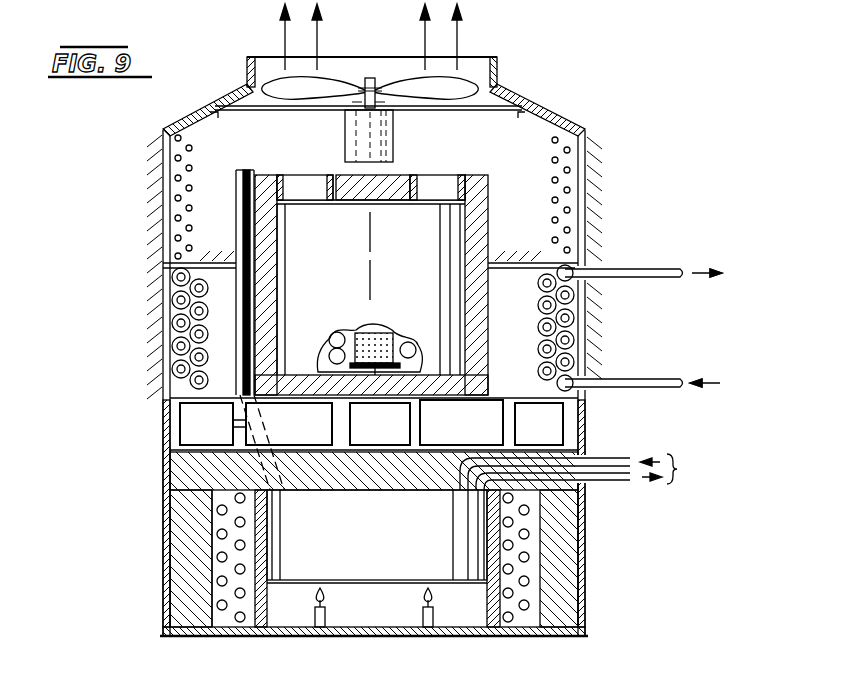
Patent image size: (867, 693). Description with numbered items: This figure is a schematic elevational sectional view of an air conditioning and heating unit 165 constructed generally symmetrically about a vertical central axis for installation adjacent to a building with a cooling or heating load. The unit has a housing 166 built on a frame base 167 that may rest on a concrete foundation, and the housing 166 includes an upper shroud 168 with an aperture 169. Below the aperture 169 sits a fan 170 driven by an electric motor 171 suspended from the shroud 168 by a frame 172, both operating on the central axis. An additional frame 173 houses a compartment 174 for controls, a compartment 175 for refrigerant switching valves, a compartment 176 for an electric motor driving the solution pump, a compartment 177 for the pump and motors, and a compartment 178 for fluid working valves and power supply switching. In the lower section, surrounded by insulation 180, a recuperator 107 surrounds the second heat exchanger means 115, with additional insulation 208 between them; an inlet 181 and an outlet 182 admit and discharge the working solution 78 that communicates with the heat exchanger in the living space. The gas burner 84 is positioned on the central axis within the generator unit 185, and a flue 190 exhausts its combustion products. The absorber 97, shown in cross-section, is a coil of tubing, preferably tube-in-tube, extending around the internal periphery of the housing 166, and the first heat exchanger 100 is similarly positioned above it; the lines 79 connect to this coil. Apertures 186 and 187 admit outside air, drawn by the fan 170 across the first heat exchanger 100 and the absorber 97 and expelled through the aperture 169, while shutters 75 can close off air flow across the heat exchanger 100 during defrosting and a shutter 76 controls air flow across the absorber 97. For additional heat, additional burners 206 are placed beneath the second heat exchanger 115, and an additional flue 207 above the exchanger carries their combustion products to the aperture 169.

The air conditioning and heating unit 165 is at (425, 342).
The housing 166 is at (587, 565).
The frame base 167 is at (480, 637).
The upper shroud 168 is at (563, 119).
The aperture 169 is at (350, 60).
The fan 170 is at (277, 88).
The electric motor 171 is at (348, 131).
The frame 172 is at (262, 112).
The additional frame 173 is at (410, 424).
The compartment for controls 174 is at (557, 435).
The compartment for refrigerant switching valves 175 is at (480, 435).
The compartment for electric motor 176 is at (225, 435).
The compartment for pump and motors 177 is at (308, 435).
The compartment for fluid working valves 178 is at (398, 435).
The shutters 75 is at (150, 198).
The shutter 76 is at (225, 249).
The working solution 78 is at (584, 468).
The coolant lines 79 is at (656, 328).
The gas burner 84 is at (364, 334).
The absorber 97 is at (546, 309).
The first heat exchanger 100 is at (553, 176).
The recuperator 107 is at (222, 610).
The second heat exchanger means 115 is at (383, 570).
The insulation 180 is at (192, 533).
The inlet 181 is at (612, 461).
The outlet 182 is at (614, 486).
The generator unit 185 is at (420, 263).
The aperture 186 is at (588, 164).
The aperture 187 is at (590, 304).
The flue 190 is at (292, 185).
The additional burners 206 is at (320, 624).
The additional flue 207 is at (245, 172).
The additional insulation 208 is at (262, 628).